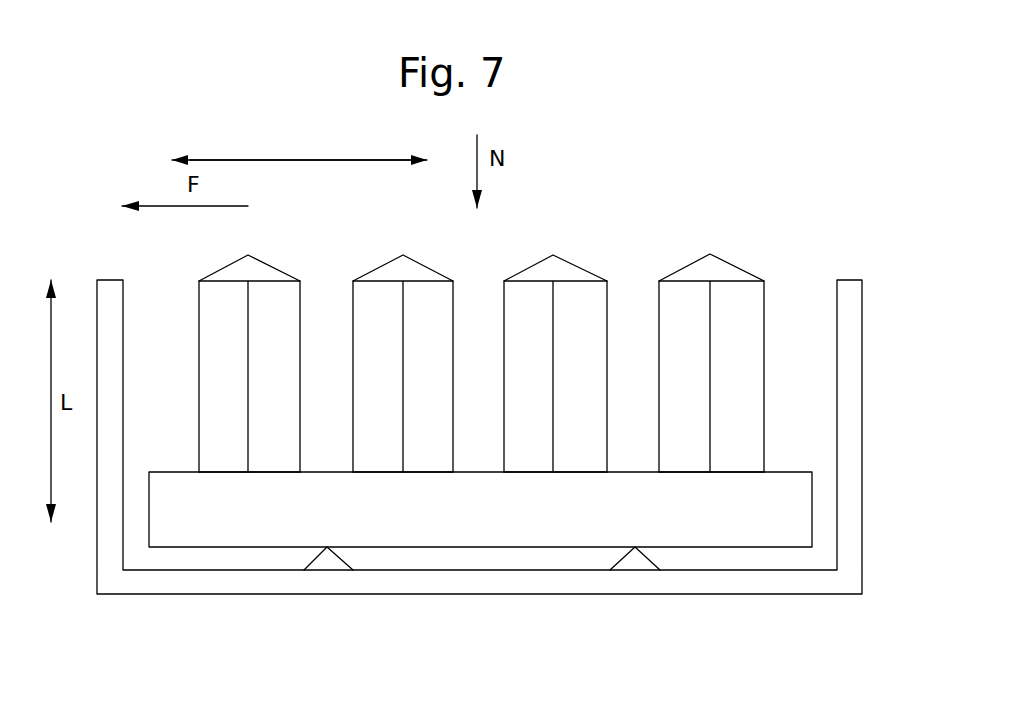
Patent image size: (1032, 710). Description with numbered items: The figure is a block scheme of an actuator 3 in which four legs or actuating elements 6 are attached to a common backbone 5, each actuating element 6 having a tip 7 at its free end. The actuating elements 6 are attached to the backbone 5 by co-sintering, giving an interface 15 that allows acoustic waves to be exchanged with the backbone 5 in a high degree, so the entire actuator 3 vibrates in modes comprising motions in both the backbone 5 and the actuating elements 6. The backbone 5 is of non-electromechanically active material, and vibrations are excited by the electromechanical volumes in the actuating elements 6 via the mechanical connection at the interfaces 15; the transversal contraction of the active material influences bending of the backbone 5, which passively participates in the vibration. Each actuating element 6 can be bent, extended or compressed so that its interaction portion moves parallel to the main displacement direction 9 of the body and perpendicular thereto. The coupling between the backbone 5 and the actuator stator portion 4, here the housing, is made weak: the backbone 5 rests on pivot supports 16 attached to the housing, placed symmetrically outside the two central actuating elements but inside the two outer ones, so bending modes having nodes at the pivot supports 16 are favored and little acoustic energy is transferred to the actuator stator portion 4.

The actuator 3 is at (632, 255).
The actuator stator portion 4 is at (150, 594).
The backbone 5 is at (258, 522).
The actuating element 6 is at (233, 378).
The pin tip 7 is at (200, 280).
The main displacement direction 9 is at (300, 143).
The interface 15 is at (278, 473).
The pivot support 16 is at (328, 560).